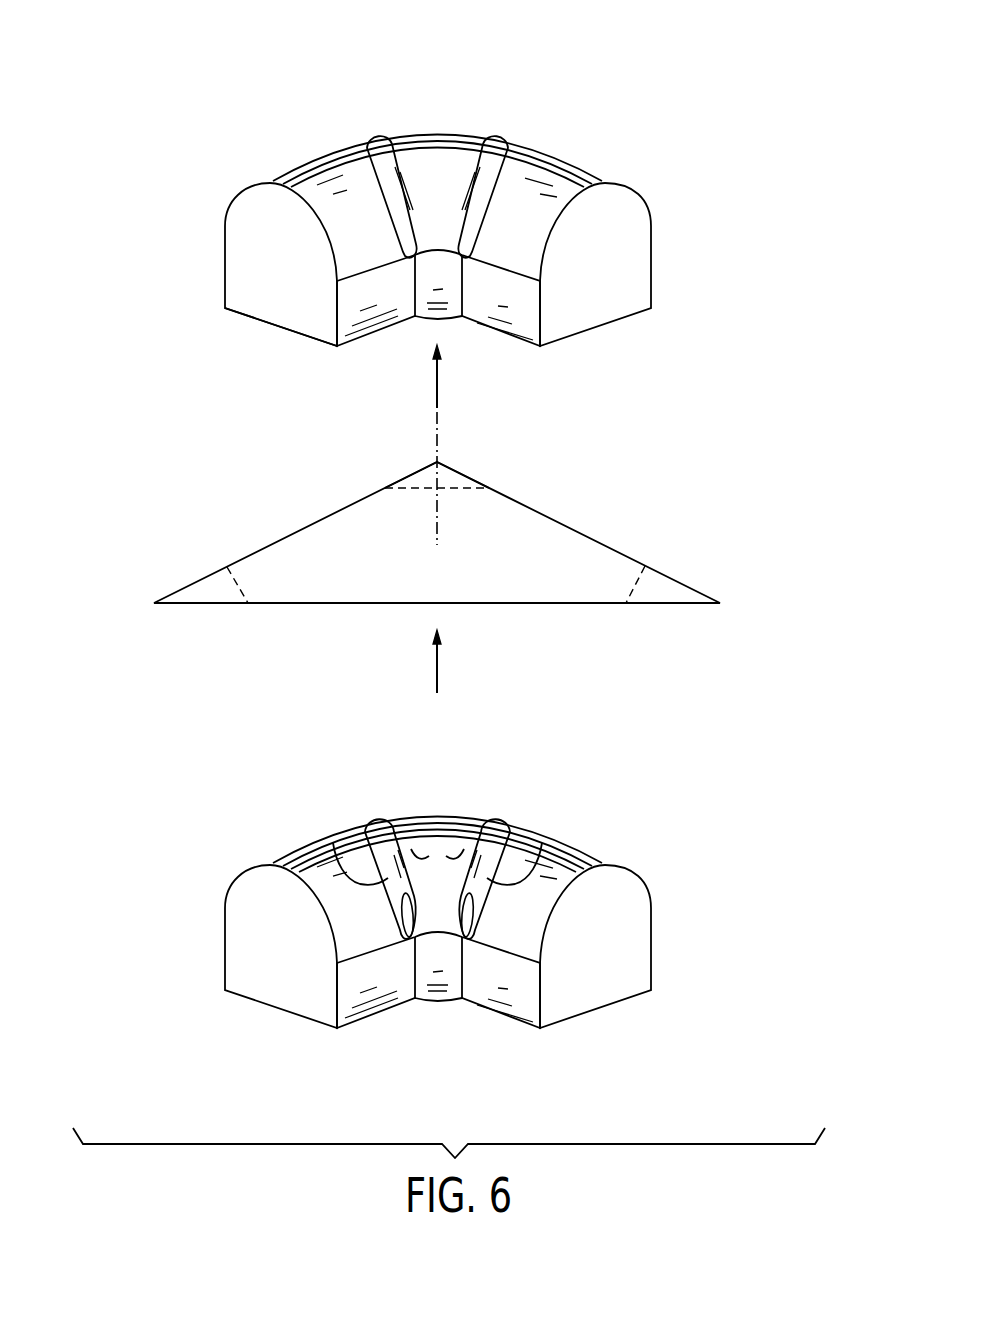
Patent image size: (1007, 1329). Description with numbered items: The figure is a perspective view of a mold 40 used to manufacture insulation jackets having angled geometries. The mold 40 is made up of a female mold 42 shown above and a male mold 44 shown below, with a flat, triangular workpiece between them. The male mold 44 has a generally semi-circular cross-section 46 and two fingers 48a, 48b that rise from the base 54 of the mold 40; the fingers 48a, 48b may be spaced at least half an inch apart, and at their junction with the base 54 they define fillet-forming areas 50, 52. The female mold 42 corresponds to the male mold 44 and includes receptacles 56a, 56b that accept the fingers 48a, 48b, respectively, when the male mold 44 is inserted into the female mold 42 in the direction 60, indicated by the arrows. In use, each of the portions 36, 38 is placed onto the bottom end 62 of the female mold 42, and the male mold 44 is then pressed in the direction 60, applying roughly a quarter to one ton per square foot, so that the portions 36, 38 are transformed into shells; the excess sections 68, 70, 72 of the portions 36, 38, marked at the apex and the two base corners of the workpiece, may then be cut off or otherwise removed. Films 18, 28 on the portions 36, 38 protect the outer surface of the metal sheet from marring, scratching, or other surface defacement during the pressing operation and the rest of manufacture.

The mold 40 is at (213, 57).
The female mold 42 is at (567, 167).
The male mold 44 is at (568, 851).
The semi-circular cross-section 46 is at (223, 913).
The finger 48a is at (498, 820).
The finger 48b is at (377, 820).
The fillet-forming area 50 is at (446, 856).
The fillet-forming area 52 is at (333, 843).
The base 54 is at (308, 851).
The receptacle 56a is at (495, 143).
The receptacle 56b is at (380, 143).
The direction 60 is at (439, 391).
The bottom end 62 is at (282, 327).
The excess section 68 is at (445, 475).
The excess section 70 is at (216, 588).
The excess section 72 is at (661, 589).
The film 18 is at (431, 570).
The film 28 is at (431, 570).
The portion 36 is at (431, 570).
The portion 38 is at (537, 542).